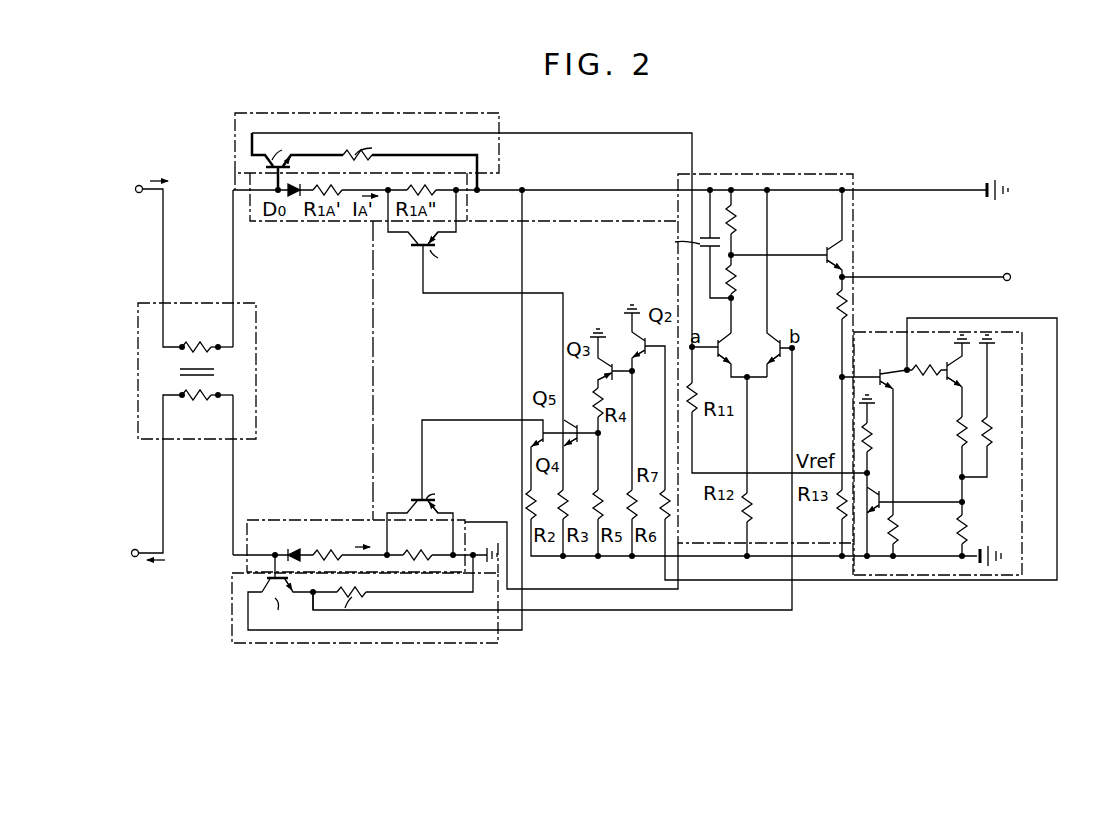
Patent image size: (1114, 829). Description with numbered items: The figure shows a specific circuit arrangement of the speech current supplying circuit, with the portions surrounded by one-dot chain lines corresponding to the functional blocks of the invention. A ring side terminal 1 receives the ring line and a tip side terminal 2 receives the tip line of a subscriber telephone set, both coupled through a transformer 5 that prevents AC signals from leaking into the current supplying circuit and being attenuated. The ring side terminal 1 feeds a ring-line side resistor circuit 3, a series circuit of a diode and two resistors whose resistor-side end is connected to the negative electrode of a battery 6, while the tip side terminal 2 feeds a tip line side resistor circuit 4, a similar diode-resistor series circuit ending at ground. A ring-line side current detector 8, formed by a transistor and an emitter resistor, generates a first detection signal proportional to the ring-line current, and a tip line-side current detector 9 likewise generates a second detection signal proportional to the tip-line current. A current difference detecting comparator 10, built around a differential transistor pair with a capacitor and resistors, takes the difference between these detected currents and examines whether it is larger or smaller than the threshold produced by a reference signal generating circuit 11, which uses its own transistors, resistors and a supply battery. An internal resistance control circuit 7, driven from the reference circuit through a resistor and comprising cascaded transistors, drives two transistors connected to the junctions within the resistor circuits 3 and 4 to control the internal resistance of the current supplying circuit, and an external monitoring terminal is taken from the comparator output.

The ring side terminal 1 is at (136, 191).
The tip side terminal 2 is at (136, 549).
The ring-line side resistor circuit 3 is at (305, 223).
The tip line side resistor circuit 4 is at (290, 520).
The transformer 5 is at (138, 355).
The battery 6 is at (987, 184).
The internal resistance control circuit 7 is at (373, 432).
The ring-line side current detector 8 is at (235, 128).
The tip line-side current detector 9 is at (232, 632).
The current difference detecting comparator 10 is at (810, 174).
The reference signal generating circuit 11 is at (1022, 466).